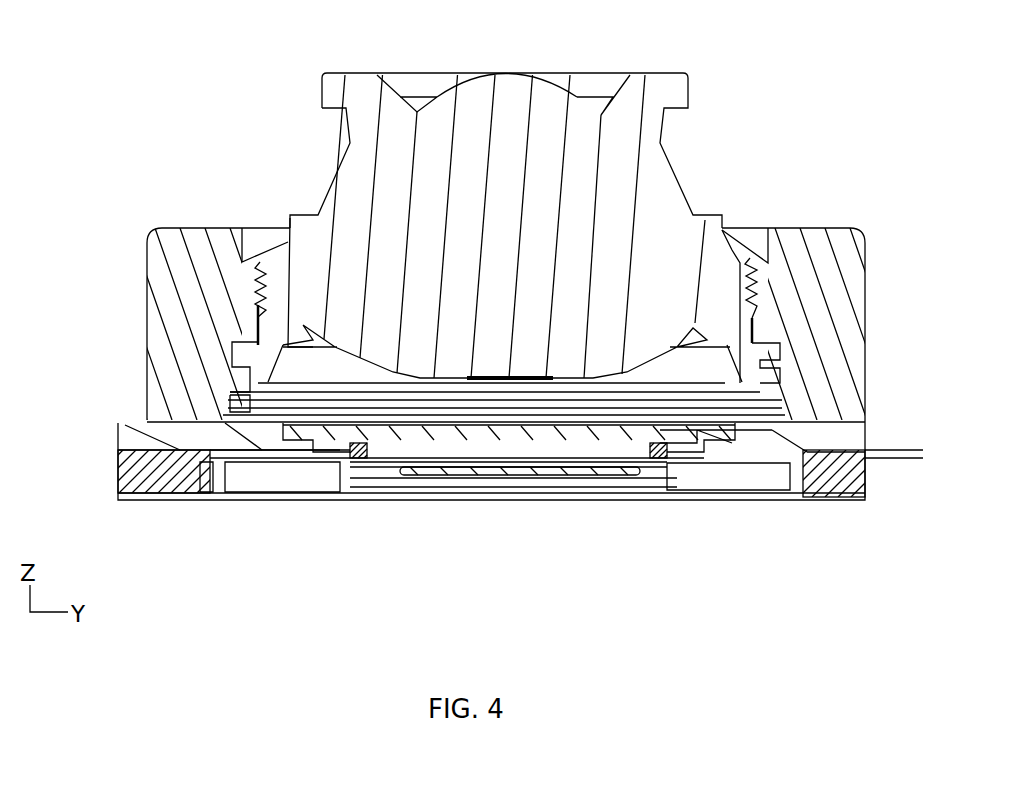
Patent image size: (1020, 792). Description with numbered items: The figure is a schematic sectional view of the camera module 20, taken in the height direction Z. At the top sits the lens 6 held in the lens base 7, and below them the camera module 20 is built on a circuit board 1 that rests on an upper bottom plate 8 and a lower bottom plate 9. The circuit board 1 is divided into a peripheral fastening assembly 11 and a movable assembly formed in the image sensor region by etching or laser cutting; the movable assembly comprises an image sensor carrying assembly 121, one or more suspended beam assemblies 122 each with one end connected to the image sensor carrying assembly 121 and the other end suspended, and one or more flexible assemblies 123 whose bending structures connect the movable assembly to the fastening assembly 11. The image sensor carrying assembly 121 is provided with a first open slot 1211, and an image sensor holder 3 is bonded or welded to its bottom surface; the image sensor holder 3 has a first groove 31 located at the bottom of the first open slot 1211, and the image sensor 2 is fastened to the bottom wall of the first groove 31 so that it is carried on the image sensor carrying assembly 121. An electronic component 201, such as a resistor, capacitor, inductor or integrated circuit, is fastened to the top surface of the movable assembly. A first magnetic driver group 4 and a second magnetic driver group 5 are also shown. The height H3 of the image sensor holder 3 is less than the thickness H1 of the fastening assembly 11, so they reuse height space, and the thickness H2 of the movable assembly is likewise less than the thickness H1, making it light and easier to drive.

The camera module 20 is at (61, 48).
The lens 6 is at (664, 179).
The lens base 7 is at (818, 247).
The upper bottom plate 8 is at (848, 433).
The lower bottom plate 9 is at (847, 500).
The circuit board 1 is at (116, 468).
The fastening assembly 11 is at (131, 458).
The flexible assembly 123 is at (213, 468).
The suspended beam assembly 122 is at (282, 467).
The image sensor carrying assembly 121 is at (362, 462).
The electronic component 201 is at (364, 459).
The first open slot 1211 is at (437, 464).
The first groove 31 is at (493, 476).
The image sensor 2 is at (573, 470).
The image sensor holder 3 is at (618, 480).
The first magnetic driver group 4 is at (698, 478).
The second magnetic driver group 5 is at (706, 452).
The height of the image sensor holder H3 is at (663, 432).
The thickness of the movable assembly H2 is at (773, 430).
The thickness of the fastening assembly H1 is at (833, 420).